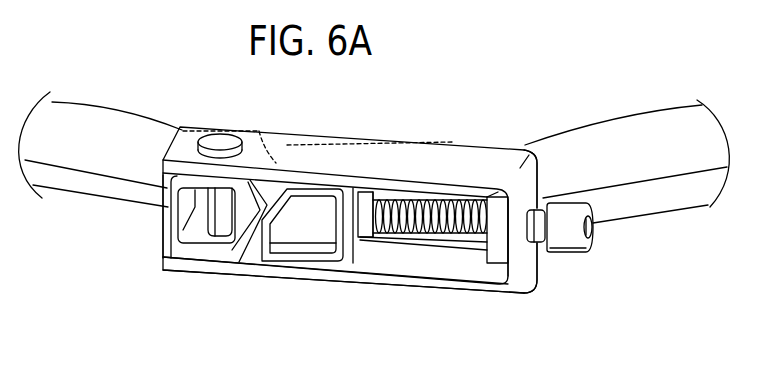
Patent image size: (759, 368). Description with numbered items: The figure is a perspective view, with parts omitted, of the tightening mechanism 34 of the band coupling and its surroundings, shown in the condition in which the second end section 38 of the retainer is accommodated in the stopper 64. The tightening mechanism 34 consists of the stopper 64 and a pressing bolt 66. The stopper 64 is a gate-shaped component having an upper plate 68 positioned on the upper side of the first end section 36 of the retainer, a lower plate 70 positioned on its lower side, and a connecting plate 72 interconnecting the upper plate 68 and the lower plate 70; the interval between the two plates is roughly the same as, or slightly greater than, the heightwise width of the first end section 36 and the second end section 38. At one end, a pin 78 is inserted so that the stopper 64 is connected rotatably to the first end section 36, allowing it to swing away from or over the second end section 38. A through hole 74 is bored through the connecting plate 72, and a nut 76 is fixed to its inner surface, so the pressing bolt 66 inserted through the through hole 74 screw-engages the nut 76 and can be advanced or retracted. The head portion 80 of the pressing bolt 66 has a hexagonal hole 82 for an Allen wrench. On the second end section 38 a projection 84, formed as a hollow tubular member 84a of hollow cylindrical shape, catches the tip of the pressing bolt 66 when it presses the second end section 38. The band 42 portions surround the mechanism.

The tightening mechanism 34 is at (329, 116).
The first end section 36 is at (170, 226).
The second end section 38 is at (291, 251).
The band 42 is at (102, 128).
The stopper 64 is at (455, 162).
The pressing bolt 66 is at (597, 258).
The upper plate 68 is at (268, 146).
The lower plate 70 is at (420, 280).
The connecting plate 72 is at (534, 188).
The through hole 74 is at (540, 246).
The nut 76 is at (497, 253).
The pin 78 is at (222, 230).
The head portion 80 is at (592, 249).
The hexagonal hole 82 is at (595, 234).
The projection 84 is at (340, 272).
The hollow tubular member 84a is at (370, 216).